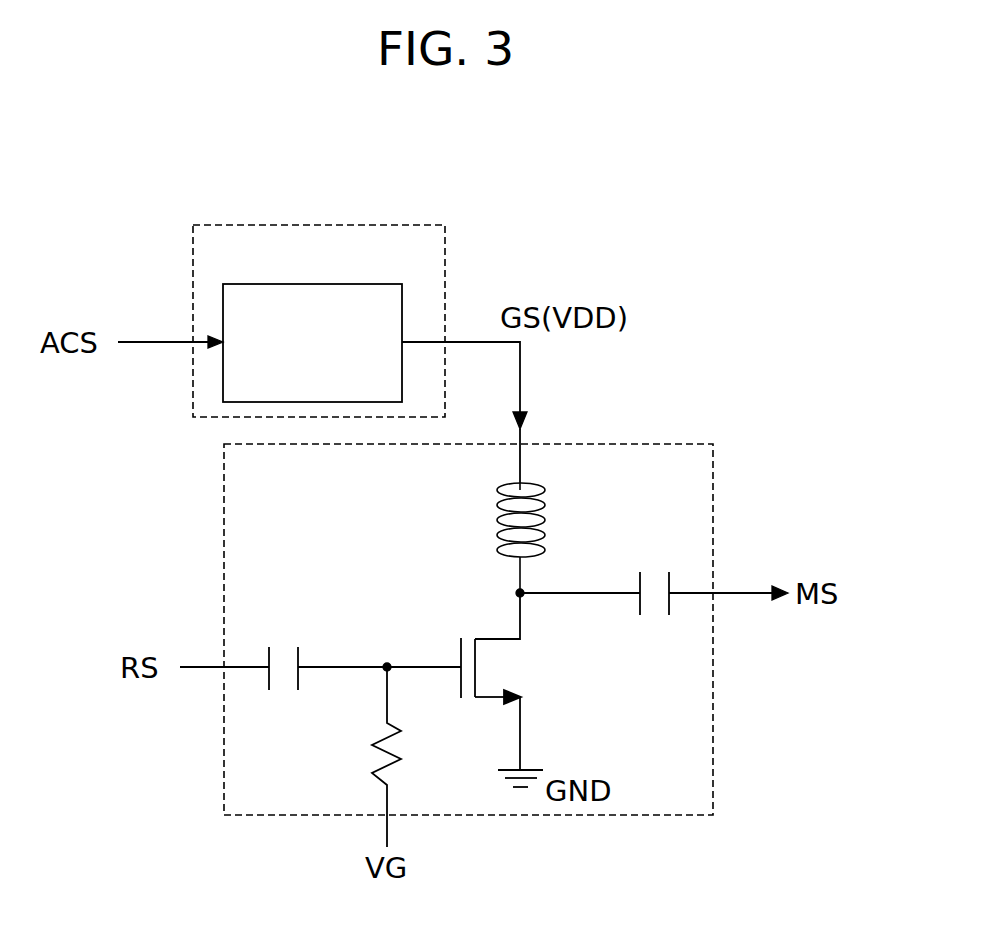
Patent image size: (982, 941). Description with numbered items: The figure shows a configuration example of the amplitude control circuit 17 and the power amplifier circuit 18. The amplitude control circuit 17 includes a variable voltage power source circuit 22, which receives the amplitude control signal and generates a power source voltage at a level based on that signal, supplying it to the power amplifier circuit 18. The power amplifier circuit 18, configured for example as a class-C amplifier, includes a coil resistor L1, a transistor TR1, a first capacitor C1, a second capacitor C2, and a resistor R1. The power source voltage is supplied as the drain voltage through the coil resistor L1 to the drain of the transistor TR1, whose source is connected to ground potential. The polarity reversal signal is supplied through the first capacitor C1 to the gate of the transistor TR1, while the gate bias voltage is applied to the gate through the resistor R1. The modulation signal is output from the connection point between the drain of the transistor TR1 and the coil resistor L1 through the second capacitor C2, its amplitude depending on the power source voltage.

The amplitude control circuit 17 is at (390, 226).
The variable voltage power source circuit 22 is at (375, 284).
The power amplifier circuit 18 is at (674, 444).
The coil resistor L1 is at (545, 492).
The first capacitor C1 is at (298, 649).
The second capacitor C2 is at (640, 575).
The resistor R1 is at (378, 746).
The transistor TR1 is at (500, 638).